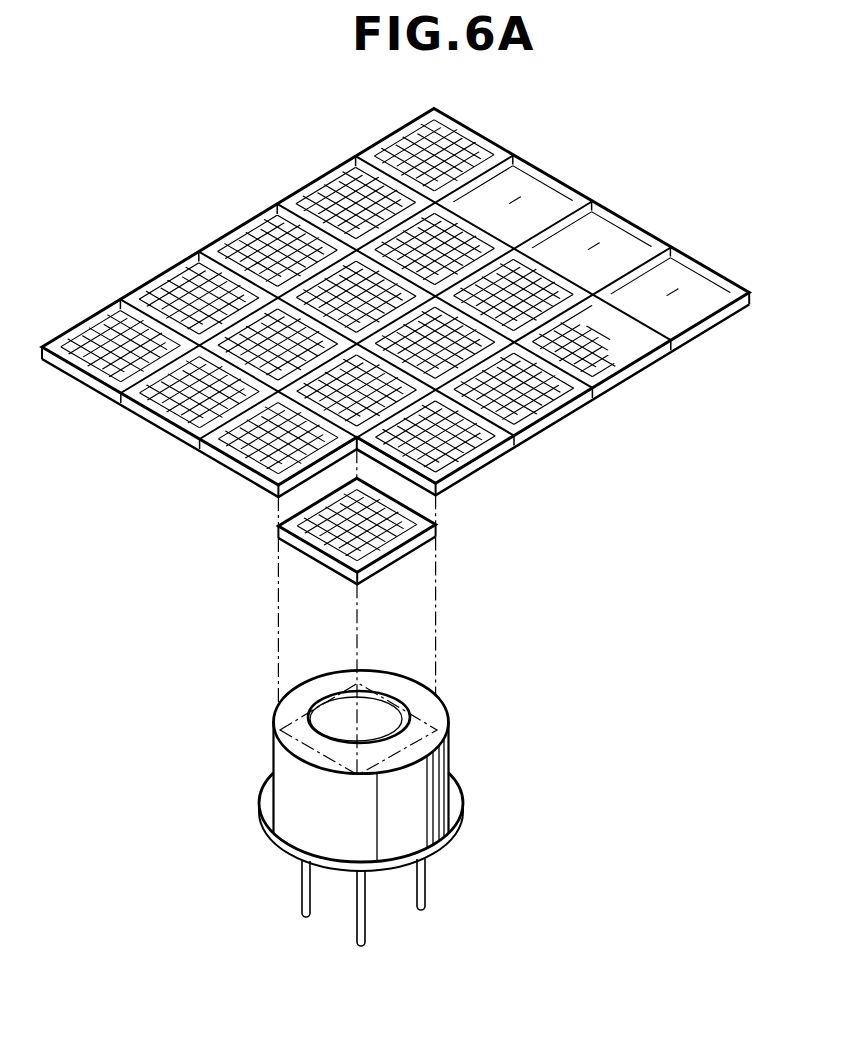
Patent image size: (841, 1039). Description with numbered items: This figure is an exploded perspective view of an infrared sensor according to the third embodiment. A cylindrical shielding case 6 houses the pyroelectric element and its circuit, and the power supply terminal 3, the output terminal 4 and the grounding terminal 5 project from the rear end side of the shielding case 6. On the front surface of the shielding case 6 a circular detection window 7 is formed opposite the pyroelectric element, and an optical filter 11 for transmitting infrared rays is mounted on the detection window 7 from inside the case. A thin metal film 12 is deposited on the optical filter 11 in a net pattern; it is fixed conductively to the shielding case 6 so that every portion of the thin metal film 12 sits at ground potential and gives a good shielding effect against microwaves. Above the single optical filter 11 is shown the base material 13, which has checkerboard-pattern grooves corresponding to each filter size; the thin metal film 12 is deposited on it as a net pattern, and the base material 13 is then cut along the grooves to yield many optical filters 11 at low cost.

The power supply terminal 3 is at (303, 889).
The output terminal 4 is at (357, 911).
The grounding terminal 5 is at (423, 887).
The shielding case 6 is at (442, 773).
The detection window 7 is at (422, 722).
The optical filter 11 is at (402, 565).
The thin metal film 12 is at (238, 478).
The base material 13 is at (466, 470).